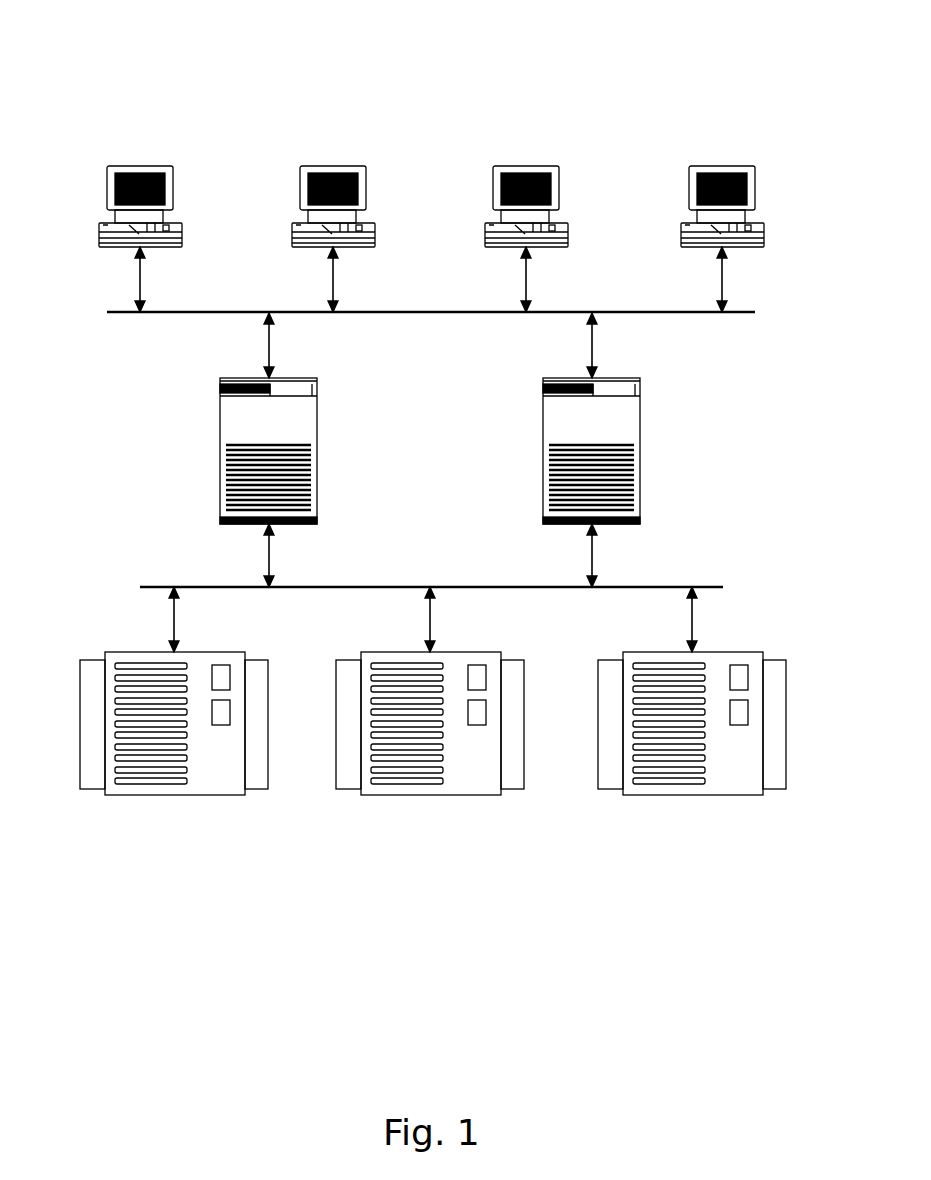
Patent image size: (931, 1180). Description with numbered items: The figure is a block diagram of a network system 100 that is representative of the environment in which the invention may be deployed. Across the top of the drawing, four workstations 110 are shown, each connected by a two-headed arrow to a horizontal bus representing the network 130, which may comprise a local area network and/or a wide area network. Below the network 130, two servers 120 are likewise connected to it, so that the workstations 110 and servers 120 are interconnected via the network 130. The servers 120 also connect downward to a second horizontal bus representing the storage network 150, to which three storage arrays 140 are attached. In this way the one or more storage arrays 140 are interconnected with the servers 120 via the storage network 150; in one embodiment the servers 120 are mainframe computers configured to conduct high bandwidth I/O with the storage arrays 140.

The network system 100 is at (77, 48).
The workstations 110 is at (173, 166).
The servers 120 is at (317, 378).
The network 130 is at (429, 310).
The storage arrays 140 is at (268, 657).
The storage network 150 is at (362, 588).